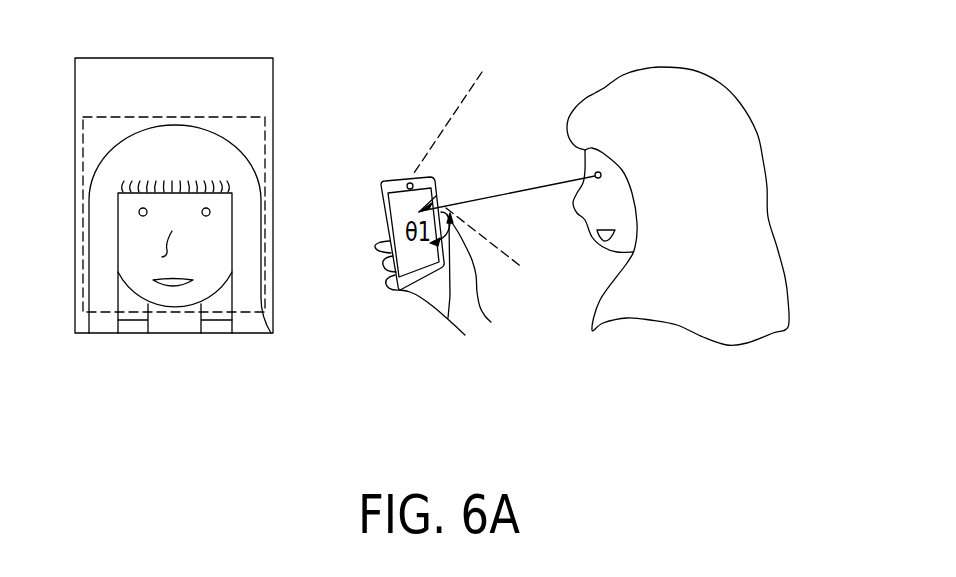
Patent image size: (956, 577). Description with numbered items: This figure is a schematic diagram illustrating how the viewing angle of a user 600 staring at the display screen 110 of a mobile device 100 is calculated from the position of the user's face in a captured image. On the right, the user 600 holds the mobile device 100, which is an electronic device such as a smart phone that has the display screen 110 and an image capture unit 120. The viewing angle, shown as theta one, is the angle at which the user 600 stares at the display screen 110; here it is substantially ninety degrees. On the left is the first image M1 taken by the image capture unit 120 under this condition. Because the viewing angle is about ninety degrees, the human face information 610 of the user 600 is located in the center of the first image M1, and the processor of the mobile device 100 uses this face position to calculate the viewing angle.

The mobile device 100 is at (382, 179).
The display screen 110 is at (405, 286).
The image capture unit 120 is at (414, 184).
The user 600 is at (762, 226).
The human face information 610 is at (267, 128).
The first image M1 is at (273, 316).